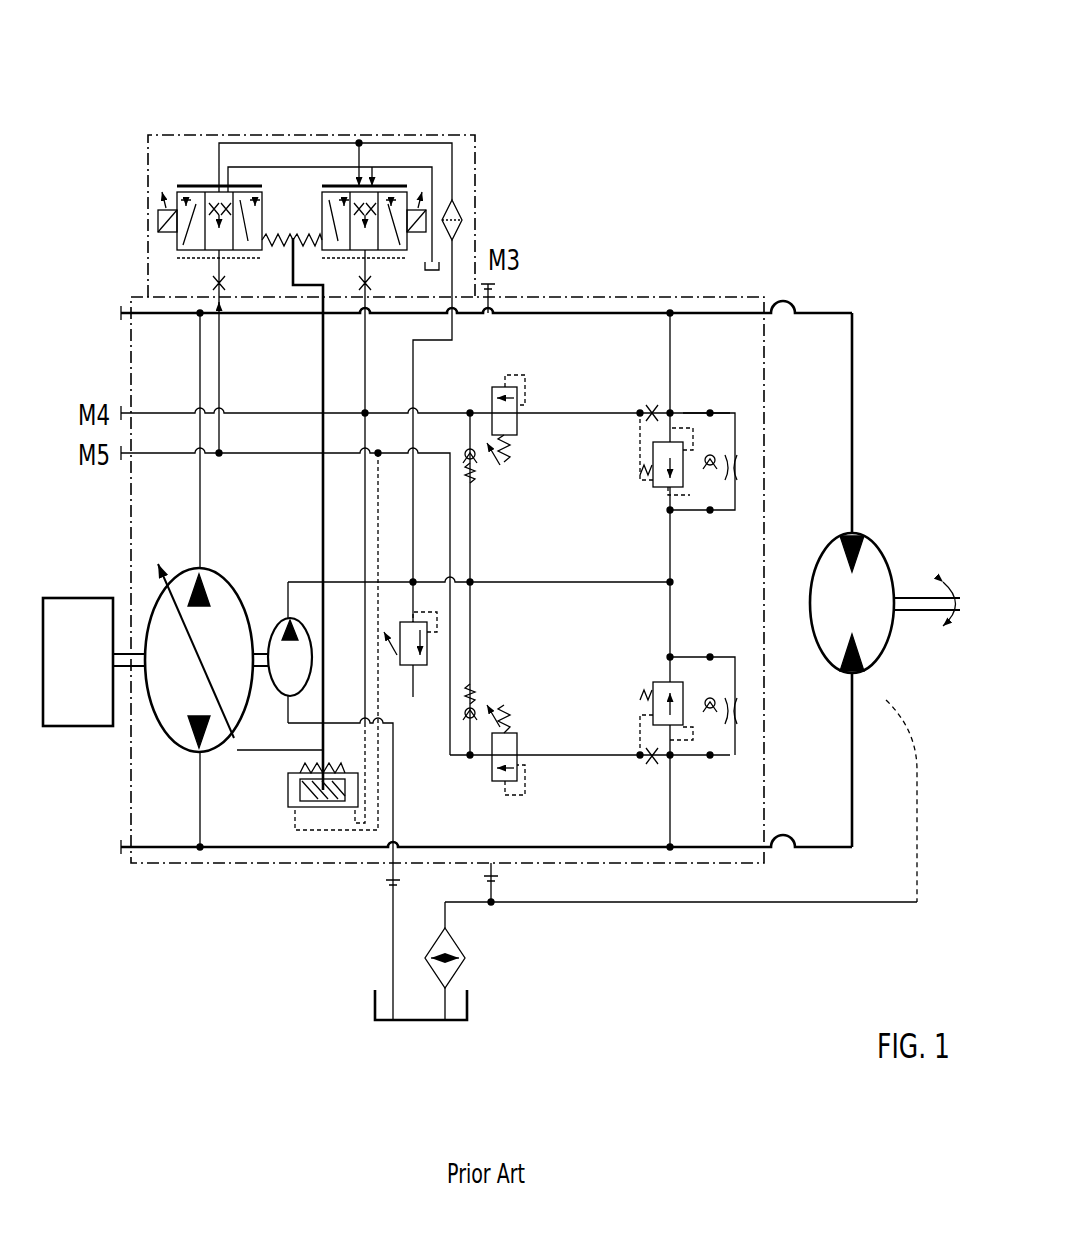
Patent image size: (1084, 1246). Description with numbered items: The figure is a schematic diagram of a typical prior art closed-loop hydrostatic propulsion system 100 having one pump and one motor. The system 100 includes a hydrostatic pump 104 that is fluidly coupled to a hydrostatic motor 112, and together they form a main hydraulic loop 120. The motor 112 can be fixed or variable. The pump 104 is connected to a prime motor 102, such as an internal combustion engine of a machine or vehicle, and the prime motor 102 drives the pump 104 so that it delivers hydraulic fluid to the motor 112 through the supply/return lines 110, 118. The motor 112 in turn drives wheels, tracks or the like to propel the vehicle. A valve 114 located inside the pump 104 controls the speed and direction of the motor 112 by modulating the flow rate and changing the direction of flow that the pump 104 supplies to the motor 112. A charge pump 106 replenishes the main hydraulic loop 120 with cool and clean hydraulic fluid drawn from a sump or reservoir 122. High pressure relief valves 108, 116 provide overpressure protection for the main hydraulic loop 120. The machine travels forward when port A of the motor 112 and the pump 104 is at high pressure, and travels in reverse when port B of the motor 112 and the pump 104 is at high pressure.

The closed-loop hydrostatic propulsion system 100 is at (838, 58).
The prime motor 102 is at (63, 745).
The hydrostatic pump 104 is at (177, 765).
The charge pump 106 is at (278, 708).
The high pressure relief valve 108 is at (690, 762).
The supply/return line 110 is at (799, 860).
The hydrostatic motor 112 is at (850, 745).
The valve 114 is at (480, 211).
The high pressure relief valve 116 is at (676, 446).
The supply/return line 118 is at (762, 294).
The main hydraulic loop 120 is at (772, 475).
The sump 122 is at (480, 1007).